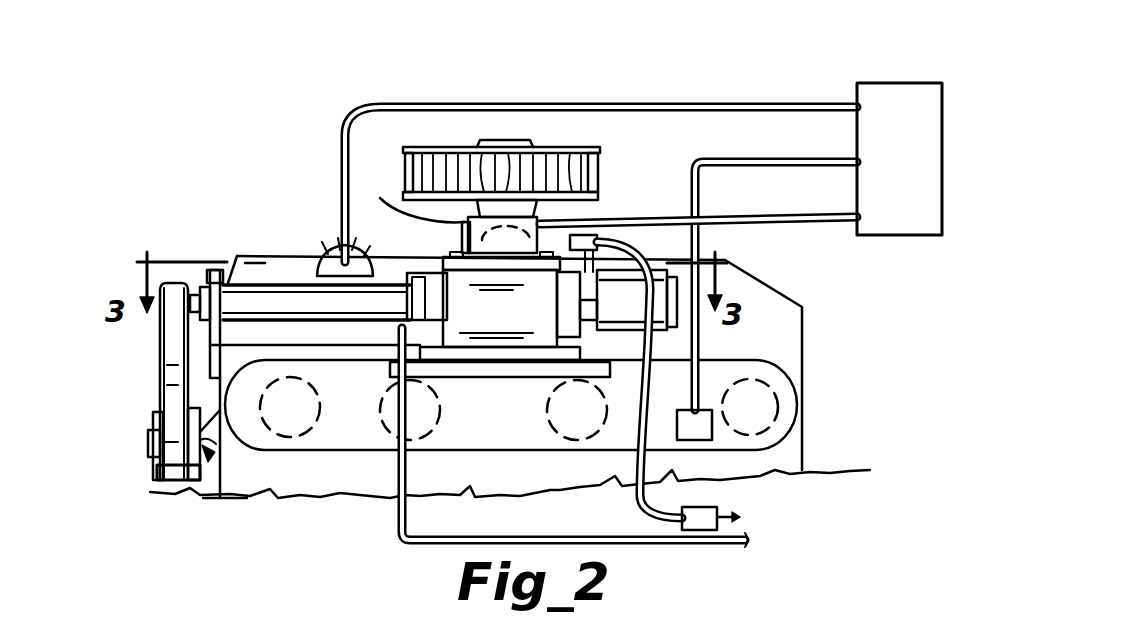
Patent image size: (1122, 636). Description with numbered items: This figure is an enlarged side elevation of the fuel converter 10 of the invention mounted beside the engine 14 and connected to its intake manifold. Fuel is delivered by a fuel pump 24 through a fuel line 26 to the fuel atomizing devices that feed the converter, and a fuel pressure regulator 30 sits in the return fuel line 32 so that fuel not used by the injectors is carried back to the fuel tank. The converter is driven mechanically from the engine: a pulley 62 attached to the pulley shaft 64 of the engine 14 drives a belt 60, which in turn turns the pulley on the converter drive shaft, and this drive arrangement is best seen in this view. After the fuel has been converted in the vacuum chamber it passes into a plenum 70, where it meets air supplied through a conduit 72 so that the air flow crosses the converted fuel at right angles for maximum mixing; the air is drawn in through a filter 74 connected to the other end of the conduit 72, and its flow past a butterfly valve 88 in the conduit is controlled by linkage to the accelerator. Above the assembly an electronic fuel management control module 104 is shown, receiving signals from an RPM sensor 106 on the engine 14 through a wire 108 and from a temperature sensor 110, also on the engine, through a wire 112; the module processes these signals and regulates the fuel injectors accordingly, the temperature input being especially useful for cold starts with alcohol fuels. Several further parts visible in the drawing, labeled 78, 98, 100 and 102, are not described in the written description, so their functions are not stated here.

The fuel converter 10 is at (467, 392).
The engine 14 is at (310, 473).
The fuel pump 24 is at (703, 512).
The fuel line 26 is at (598, 240).
The fuel pressure regulator 30 is at (590, 235).
The return fuel line 32 is at (398, 537).
The belt 60 is at (178, 345).
The pulley 62 is at (147, 473).
The pulley shaft 64 is at (210, 466).
The plenum 70 is at (513, 320).
The conduit 72 is at (463, 250).
The filter 74 is at (455, 147).
The hose 78 is at (380, 198).
The butterfly valve 88 is at (540, 143).
The base plate 98 is at (412, 370).
The housing 100 is at (553, 148).
The conduit 102 is at (800, 222).
The electronic fuel management control module 104 is at (902, 218).
The RPM sensor 106 is at (326, 252).
The wire 108 is at (540, 104).
The temperature sensor 110 is at (712, 425).
The wire 112 is at (757, 158).